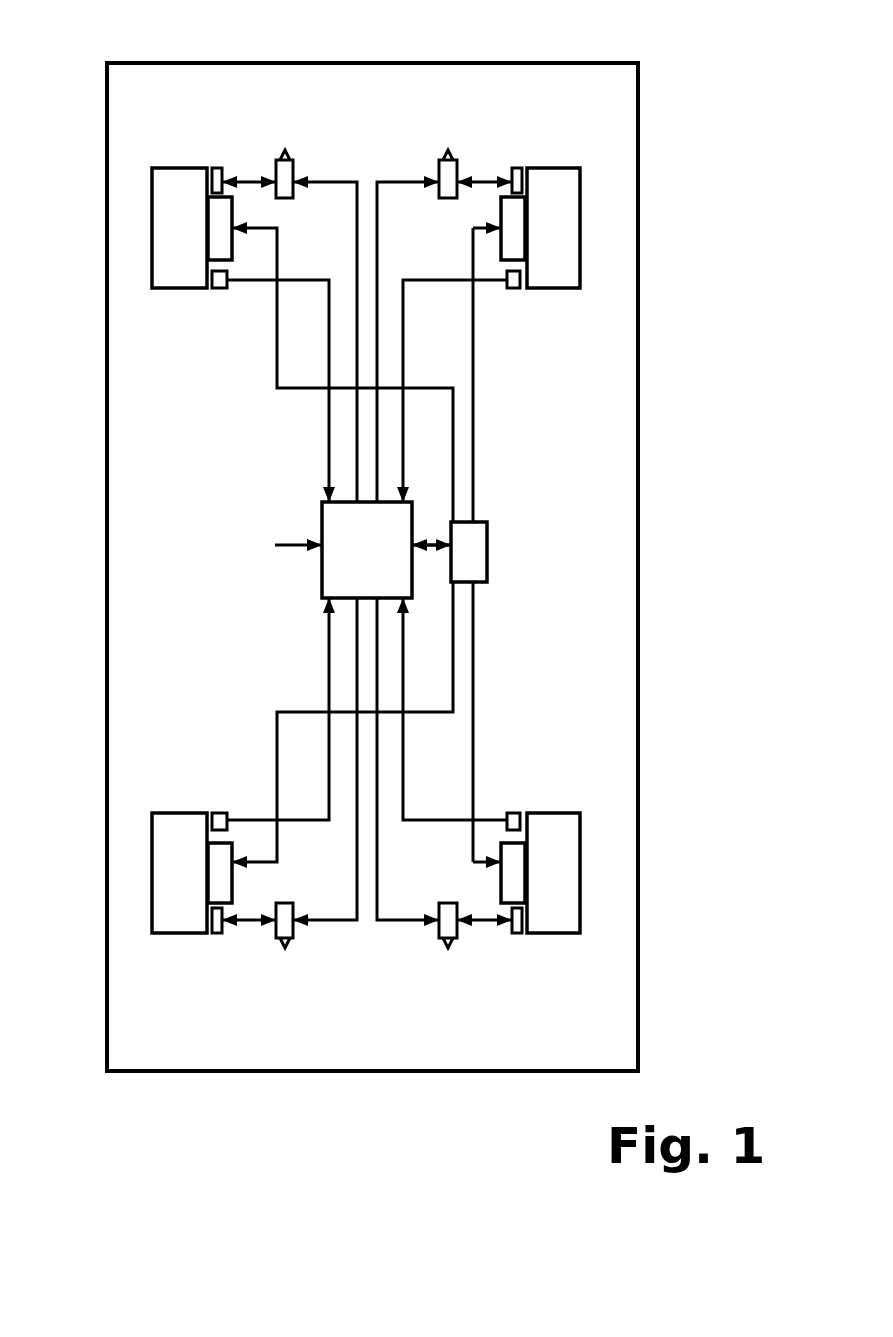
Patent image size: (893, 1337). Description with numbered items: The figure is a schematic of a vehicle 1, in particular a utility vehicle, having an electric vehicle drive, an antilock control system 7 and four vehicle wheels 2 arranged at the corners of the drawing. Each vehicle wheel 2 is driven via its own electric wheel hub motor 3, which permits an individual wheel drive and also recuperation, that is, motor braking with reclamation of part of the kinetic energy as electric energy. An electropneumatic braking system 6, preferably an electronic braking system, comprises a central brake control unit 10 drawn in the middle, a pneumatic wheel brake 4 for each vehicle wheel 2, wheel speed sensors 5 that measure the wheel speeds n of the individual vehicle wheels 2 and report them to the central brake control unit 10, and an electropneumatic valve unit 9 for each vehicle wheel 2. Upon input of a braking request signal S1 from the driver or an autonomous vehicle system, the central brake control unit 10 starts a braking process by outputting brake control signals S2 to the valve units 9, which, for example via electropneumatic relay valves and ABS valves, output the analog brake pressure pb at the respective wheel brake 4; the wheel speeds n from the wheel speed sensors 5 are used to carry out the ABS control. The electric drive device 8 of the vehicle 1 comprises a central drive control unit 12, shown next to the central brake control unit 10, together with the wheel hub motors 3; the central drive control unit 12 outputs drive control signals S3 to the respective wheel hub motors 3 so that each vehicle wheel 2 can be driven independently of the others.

The vehicle 1 is at (107, 1071).
The vehicle wheel 2 is at (160, 212).
The electric wheel hub motor 3 is at (232, 213).
The wheel brake 4 is at (214, 168).
The wheel speed sensor 5 is at (215, 288).
The electropneumatic braking system 6 is at (675, 455).
The antilock control system 7 is at (675, 135).
The electric drive device 8 is at (688, 520).
The electropneumatic valve unit 9 is at (298, 150).
The central brake control unit 10 is at (322, 572).
The central drive control unit 12 is at (487, 560).
The braking request signal S1 is at (276, 528).
The brake control signal S2 is at (340, 180).
The drive control signal S3 is at (377, 545).
The wheel speed n is at (367, 531).
The brake pressure pb is at (254, 180).